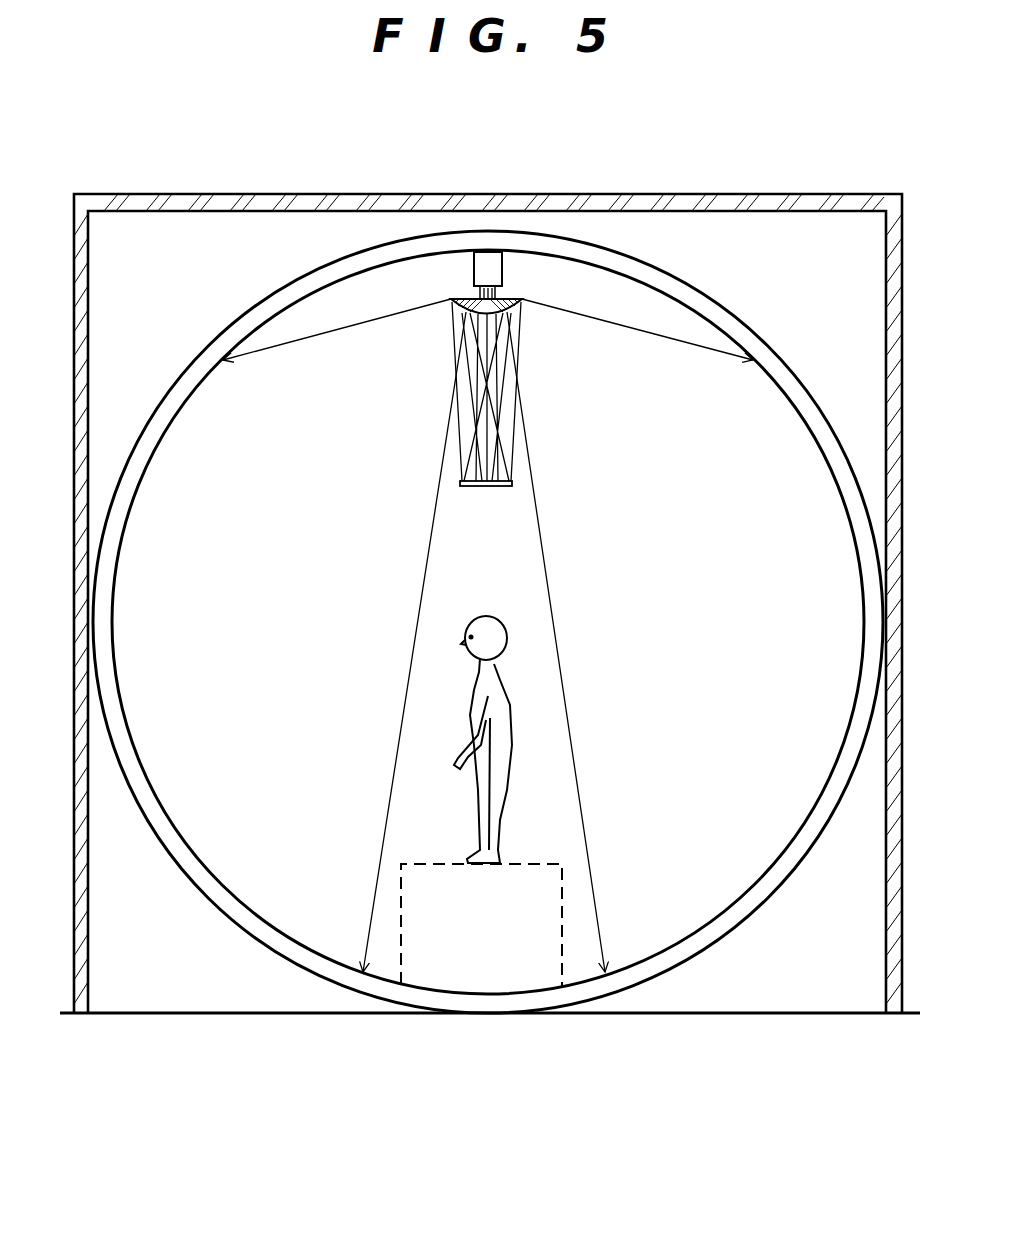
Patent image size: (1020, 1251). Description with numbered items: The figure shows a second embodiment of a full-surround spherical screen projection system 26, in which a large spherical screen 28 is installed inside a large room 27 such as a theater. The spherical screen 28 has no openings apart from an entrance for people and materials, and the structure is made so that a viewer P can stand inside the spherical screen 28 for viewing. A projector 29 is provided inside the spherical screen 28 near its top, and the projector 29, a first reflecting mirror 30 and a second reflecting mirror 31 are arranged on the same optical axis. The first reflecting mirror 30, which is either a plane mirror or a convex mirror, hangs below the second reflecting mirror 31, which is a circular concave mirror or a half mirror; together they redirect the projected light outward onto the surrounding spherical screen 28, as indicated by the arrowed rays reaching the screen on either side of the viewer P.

The full-surround spherical screen projection system 26 is at (737, 127).
The room 27 is at (200, 203).
The spherical screen 28 is at (307, 950).
The projector 29 is at (490, 262).
The first reflecting mirror 30 is at (512, 483).
The second reflecting mirror 31 is at (462, 296).
The person P is at (493, 628).